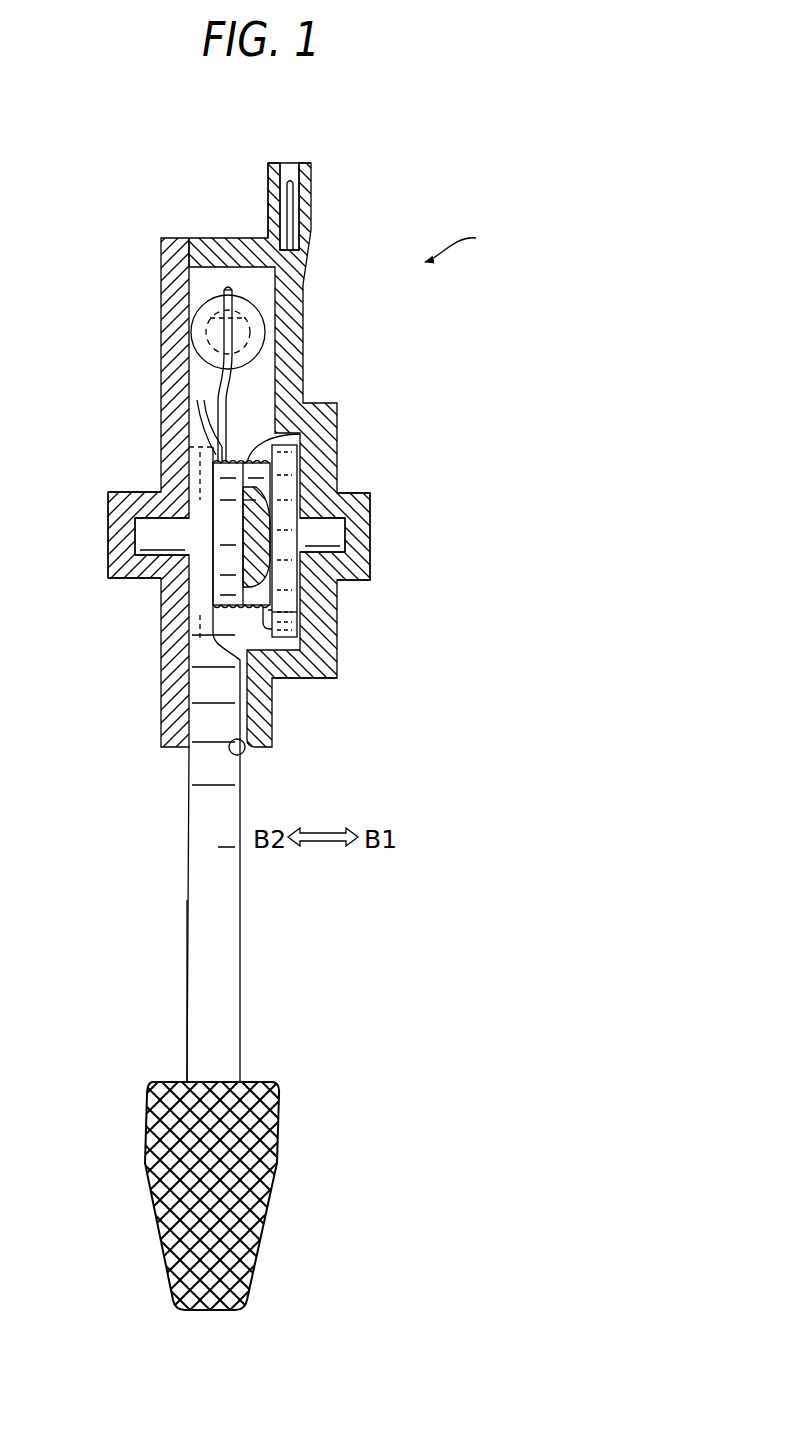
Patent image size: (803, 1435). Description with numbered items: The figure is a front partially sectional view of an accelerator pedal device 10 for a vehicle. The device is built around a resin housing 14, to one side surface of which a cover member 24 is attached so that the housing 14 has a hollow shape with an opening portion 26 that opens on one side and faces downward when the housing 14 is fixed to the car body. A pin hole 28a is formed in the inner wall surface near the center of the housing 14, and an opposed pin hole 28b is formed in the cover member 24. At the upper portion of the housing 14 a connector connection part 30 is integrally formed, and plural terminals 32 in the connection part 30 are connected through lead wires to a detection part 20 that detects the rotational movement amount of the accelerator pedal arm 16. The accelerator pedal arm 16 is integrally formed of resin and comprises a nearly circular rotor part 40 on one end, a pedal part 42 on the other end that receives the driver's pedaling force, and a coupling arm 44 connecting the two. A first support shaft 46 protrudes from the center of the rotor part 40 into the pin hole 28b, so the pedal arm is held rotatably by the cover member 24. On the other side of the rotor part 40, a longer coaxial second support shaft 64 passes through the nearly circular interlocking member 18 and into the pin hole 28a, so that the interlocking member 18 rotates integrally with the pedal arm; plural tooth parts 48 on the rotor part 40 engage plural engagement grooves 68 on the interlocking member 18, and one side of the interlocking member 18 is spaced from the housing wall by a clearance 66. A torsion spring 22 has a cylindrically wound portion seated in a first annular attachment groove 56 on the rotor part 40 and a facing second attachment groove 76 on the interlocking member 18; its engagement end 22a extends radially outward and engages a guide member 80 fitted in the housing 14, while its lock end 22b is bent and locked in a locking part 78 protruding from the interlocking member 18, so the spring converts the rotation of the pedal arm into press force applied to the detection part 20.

The accelerator pedal device 10 is at (467, 239).
The housing 14 is at (298, 346).
The accelerator pedal arm 16 is at (218, 937).
The interlocking member 18 is at (292, 478).
The detection part 20 is at (198, 337).
The torsion spring 22 is at (241, 460).
The engagement end 22a is at (224, 297).
The lock end 22b is at (263, 620).
The cover member 24 is at (165, 670).
The opening portion 26 is at (242, 752).
The pin hole 28a is at (320, 521).
The pin hole 28b is at (153, 520).
The connector connection part 30 is at (316, 196).
The terminal 32 is at (286, 200).
The rotor part 40 is at (210, 452).
The pedal part 42 is at (160, 1205).
The coupling arm 44 is at (197, 993).
The first support shaft 46 is at (143, 537).
The tooth parts 48 is at (243, 522).
The first annular attachment groove 56 is at (209, 420).
The second support shaft 64 is at (330, 552).
The clearance 66 is at (300, 600).
The engagement grooves 68 is at (238, 504).
The second attachment groove 76 is at (301, 437).
The locking part 78 is at (332, 663).
The guide member 80 is at (244, 324).